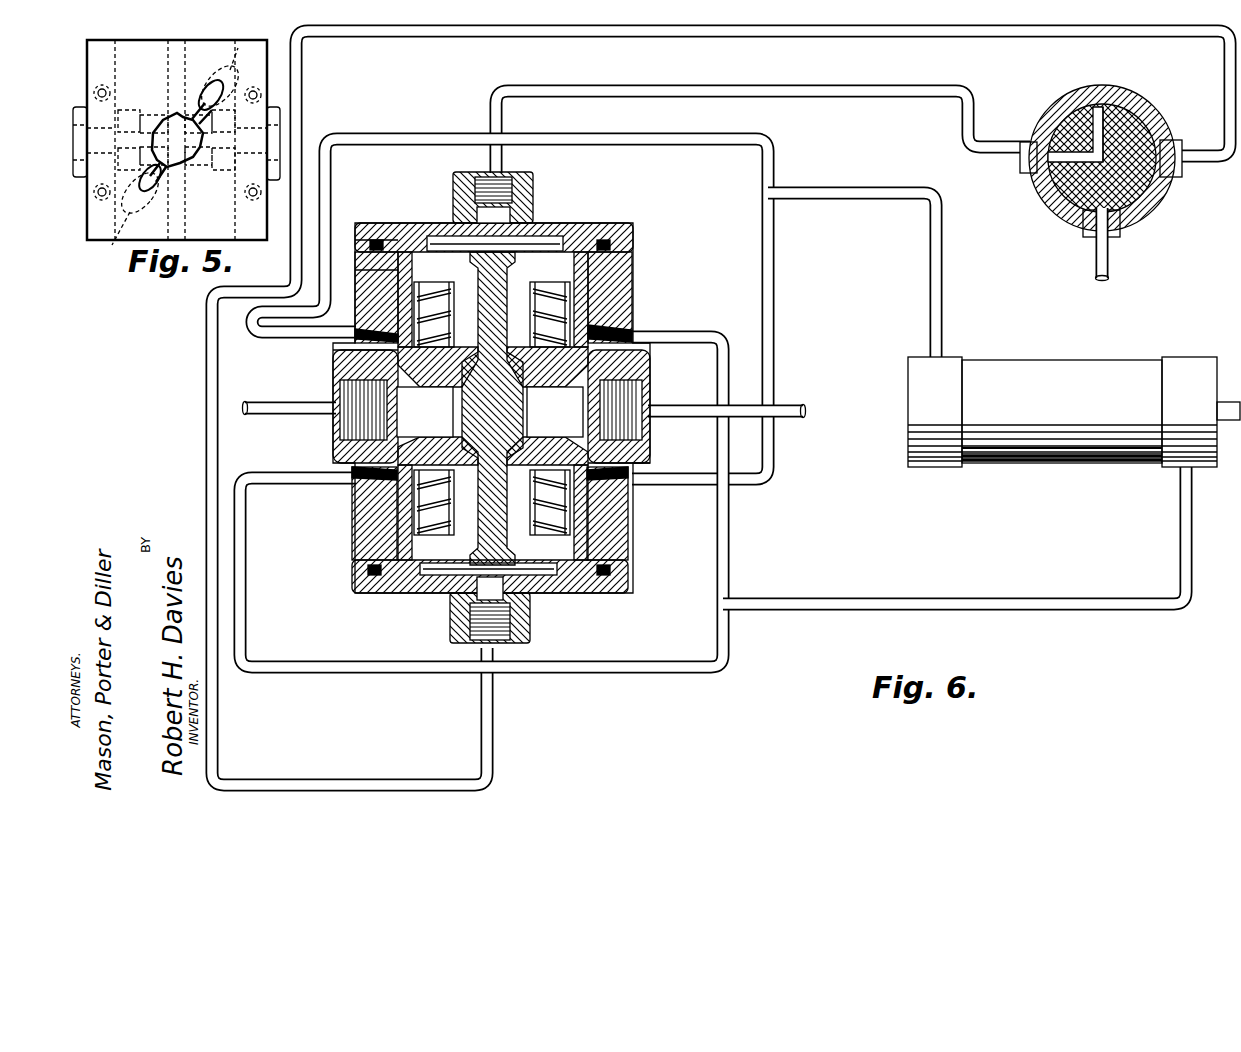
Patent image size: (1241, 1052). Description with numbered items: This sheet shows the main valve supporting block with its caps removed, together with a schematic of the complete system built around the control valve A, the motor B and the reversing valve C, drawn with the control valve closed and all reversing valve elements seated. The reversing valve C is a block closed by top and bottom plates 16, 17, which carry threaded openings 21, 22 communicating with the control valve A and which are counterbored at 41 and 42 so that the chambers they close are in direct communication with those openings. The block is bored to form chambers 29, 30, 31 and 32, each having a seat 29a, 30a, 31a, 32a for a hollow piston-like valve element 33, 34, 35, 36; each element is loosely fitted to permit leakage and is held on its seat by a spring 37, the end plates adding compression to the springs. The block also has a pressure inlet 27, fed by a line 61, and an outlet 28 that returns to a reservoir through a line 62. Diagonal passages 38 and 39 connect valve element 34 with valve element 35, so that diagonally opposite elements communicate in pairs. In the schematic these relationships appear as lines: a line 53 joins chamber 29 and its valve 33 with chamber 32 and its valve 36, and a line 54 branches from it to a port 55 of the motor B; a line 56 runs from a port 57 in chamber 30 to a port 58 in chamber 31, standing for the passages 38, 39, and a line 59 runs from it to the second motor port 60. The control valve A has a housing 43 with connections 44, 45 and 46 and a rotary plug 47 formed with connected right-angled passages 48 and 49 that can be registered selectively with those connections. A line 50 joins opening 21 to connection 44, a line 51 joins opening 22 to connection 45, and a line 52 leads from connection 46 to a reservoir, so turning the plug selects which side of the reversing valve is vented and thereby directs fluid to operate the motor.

In FIG. 6, the top plate 16 is at (612, 222).
In FIG. 6, the bottom plate 17 is at (420, 600).
In FIG. 6, the threaded opening 21 is at (512, 188).
In FIG. 6, the threaded opening 22 is at (512, 625).
In FIG. 6, the pressure inlet 27 is at (340, 375).
In FIG. 6, the outlet 28 is at (640, 395).
In FIG. 5, the chamber 29 is at (114, 48).
In FIG. 6, the chamber 29 is at (408, 250).
In FIG. 6, the seat 29a is at (360, 362).
In FIG. 5, the chamber 30 is at (244, 48).
In FIG. 6, the chamber 30 is at (398, 545).
In FIG. 6, the seat 30a is at (425, 412).
In FIG. 5, the chamber 31 is at (182, 210).
In FIG. 6, the chamber 31 is at (595, 285).
In FIG. 6, the seat 31a is at (555, 412).
In FIG. 5, the chamber 32 is at (236, 240).
In FIG. 6, the chamber 32 is at (598, 535).
In FIG. 6, the seat 32a is at (636, 470).
In FIG. 6, the valve element 33 is at (365, 224).
In FIG. 6, the valve element 34 is at (355, 520).
In FIG. 6, the valve element 35 is at (600, 305).
In FIG. 6, the valve element 36 is at (598, 512).
In FIG. 6, the spring 37 is at (356, 330).
In FIG. 5, the diagonal passage 38 is at (108, 242).
In FIG. 5, the diagonal passage 39 is at (221, 45).
In FIG. 6, the counterbore 41 is at (556, 237).
In FIG. 6, the counterbore 42 is at (440, 595).
In FIG. 6, the housing 43 is at (1060, 95).
In FIG. 6, the connection 44 is at (1020, 150).
In FIG. 6, the connection 45 is at (1180, 175).
In FIG. 6, the connection 46 is at (1118, 228).
In FIG. 6, the rotary plug 47 is at (1098, 110).
In FIG. 6, the passage 48 is at (1058, 190).
In FIG. 6, the passage 49 is at (1108, 120).
In FIG. 6, the line 50 is at (697, 90).
In FIG. 6, the line 51 is at (494, 722).
In FIG. 6, the line 52 is at (1116, 256).
In FIG. 6, the line 53 is at (356, 133).
In FIG. 6, the line 54 is at (826, 188).
In FIG. 6, the port 55 is at (930, 352).
In FIG. 6, the line 56 is at (363, 668).
In FIG. 6, the port 57 is at (352, 473).
In FIG. 6, the port 58 is at (636, 333).
In FIG. 6, the line 59 is at (840, 598).
In FIG. 6, the motor port 60 is at (1172, 470).
In FIG. 6, the line 61 is at (294, 392).
In FIG. 6, the line 62 is at (797, 404).
In FIG. 6, the control valve A is at (1104, 150).
In FIG. 6, the motor B is at (1067, 411).
In FIG. 6, the reversing valve C is at (643, 241).